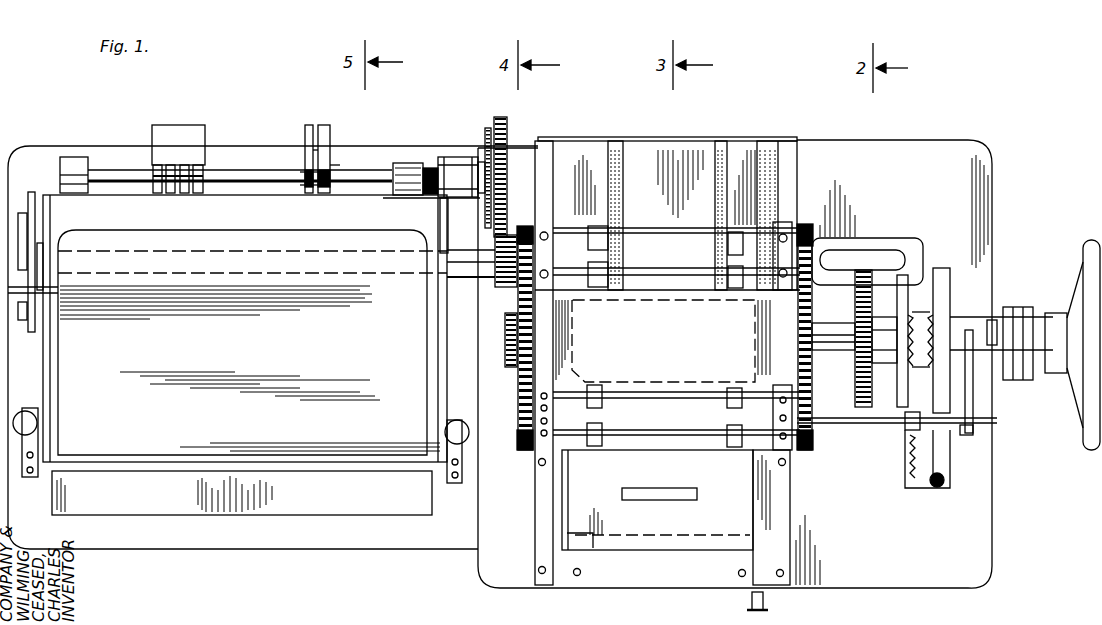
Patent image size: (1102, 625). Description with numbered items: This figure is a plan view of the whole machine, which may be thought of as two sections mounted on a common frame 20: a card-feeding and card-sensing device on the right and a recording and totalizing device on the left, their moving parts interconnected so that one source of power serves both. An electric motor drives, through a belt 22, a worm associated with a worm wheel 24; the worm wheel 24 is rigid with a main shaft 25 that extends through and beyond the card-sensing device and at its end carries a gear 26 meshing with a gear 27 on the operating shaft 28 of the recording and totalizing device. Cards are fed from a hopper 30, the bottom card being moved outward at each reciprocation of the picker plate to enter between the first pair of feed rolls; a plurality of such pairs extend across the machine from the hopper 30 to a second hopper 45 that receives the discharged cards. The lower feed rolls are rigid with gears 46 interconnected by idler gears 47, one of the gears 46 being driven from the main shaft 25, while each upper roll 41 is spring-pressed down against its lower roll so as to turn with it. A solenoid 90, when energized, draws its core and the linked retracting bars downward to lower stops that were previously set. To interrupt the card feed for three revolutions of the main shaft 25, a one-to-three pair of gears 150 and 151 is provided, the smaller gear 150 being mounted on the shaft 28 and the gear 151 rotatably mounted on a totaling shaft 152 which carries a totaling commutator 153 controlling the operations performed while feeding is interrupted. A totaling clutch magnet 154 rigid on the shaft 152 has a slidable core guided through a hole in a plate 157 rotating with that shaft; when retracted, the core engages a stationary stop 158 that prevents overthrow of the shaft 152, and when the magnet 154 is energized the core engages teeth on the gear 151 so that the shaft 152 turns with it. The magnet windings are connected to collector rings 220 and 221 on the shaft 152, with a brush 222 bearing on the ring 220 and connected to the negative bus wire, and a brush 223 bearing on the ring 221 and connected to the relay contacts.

The frame 20 is at (431, 540).
The belt 22 is at (879, 251).
The worm wheel 24 is at (862, 410).
The main shaft 25 is at (827, 352).
The gear 26 is at (520, 366).
The gear 27 is at (514, 288).
The operating shaft 28 is at (369, 272).
The hopper 30 is at (662, 527).
The upper feed rolls 41 is at (728, 246).
The second hopper 45 is at (672, 155).
The gears 46 is at (812, 236).
The idler gears 47 is at (518, 411).
The solenoid 90 is at (25, 412).
The gear 150 is at (494, 284).
The gear 151 is at (508, 120).
The totaling shaft 152 is at (219, 174).
The totaling commutator 153 is at (160, 133).
The totaling clutch magnet 154 is at (460, 158).
The plate 157 is at (485, 133).
The stationary stop 158 is at (418, 182).
The collector ring 220 is at (325, 127).
The collector ring 221 is at (310, 126).
The brush 222 is at (332, 168).
The brush 223 is at (305, 172).